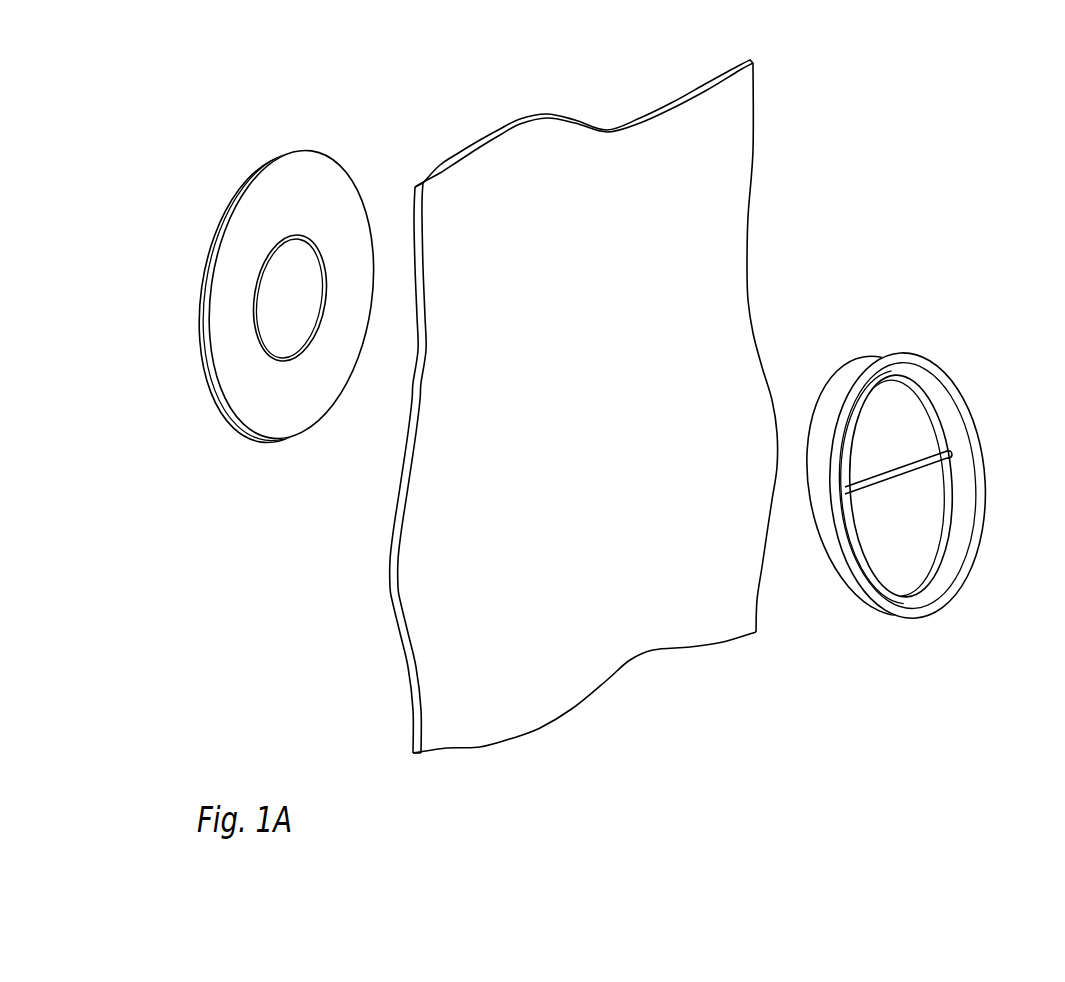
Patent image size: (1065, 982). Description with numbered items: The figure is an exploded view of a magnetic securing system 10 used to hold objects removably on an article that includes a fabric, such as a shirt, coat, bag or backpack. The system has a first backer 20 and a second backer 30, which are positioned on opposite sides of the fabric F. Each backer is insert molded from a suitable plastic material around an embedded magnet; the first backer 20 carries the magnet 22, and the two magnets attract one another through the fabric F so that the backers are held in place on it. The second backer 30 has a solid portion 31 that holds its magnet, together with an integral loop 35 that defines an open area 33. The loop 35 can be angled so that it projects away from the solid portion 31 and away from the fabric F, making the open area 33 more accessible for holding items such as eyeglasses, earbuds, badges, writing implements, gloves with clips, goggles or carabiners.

The magnetic securing system 10 is at (345, 81).
The first backer 20 is at (288, 182).
The magnet 22 is at (290, 337).
The fabric F is at (738, 278).
The second backer 30 is at (918, 502).
The solid portion 31 is at (927, 420).
The open area 33 is at (932, 525).
The loop 35 is at (950, 602).